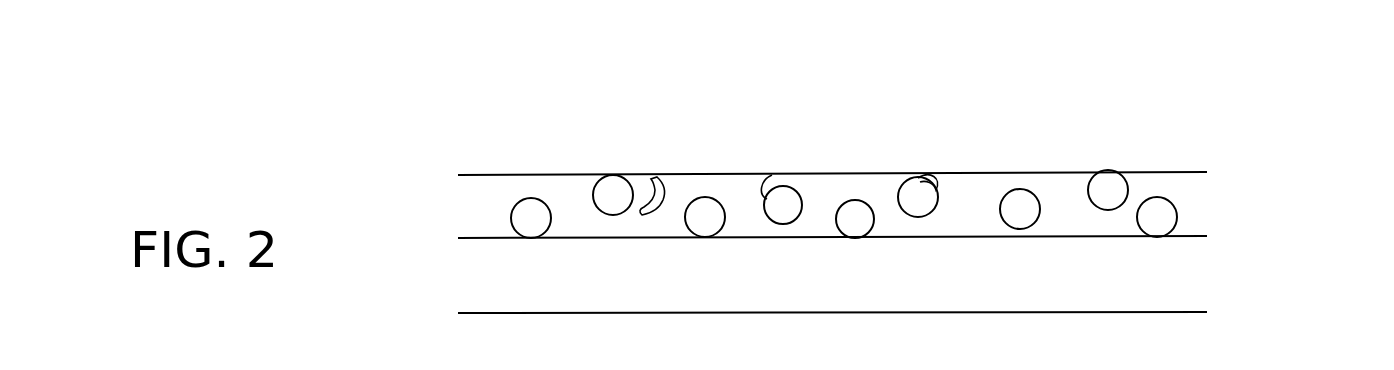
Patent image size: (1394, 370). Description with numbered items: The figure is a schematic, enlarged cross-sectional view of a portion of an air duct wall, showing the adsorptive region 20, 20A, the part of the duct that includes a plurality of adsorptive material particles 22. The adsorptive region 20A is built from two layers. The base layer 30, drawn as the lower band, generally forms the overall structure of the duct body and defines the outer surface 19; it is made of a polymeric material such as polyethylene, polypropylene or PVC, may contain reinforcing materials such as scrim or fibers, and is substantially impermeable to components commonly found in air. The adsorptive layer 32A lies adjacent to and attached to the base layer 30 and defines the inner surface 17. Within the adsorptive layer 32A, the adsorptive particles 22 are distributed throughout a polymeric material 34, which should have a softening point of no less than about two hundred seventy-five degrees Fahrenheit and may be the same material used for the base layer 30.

The adsorptive region 20 is at (1193, 98).
The adsorptive region 20A is at (1205, 142).
The adsorptive layer 32A is at (480, 203).
The inner surface 17 is at (510, 175).
The polymeric material 34 is at (967, 212).
The adsorptive material particles 22 is at (702, 212).
The base layer 30 is at (508, 278).
The outer surface 19 is at (755, 313).